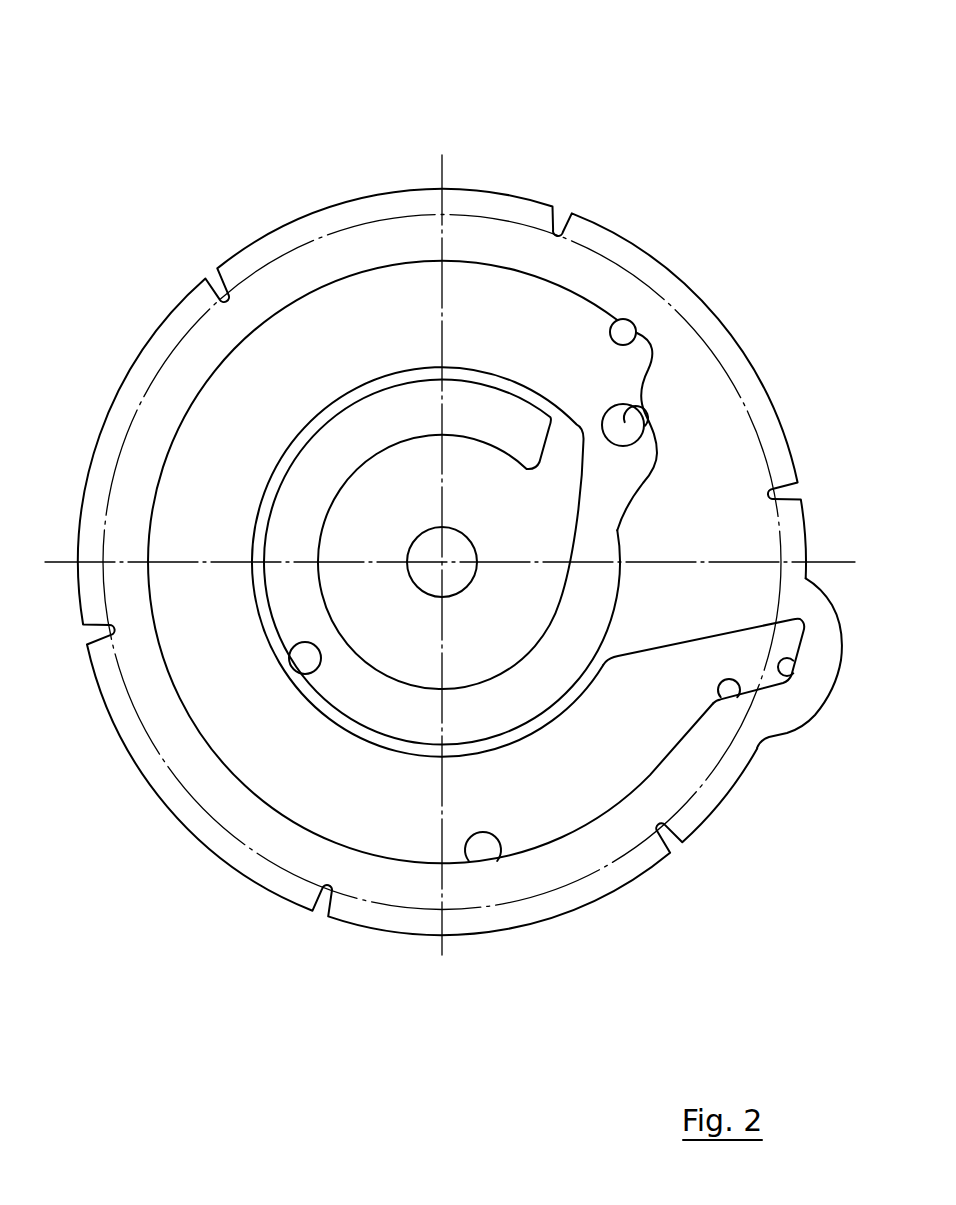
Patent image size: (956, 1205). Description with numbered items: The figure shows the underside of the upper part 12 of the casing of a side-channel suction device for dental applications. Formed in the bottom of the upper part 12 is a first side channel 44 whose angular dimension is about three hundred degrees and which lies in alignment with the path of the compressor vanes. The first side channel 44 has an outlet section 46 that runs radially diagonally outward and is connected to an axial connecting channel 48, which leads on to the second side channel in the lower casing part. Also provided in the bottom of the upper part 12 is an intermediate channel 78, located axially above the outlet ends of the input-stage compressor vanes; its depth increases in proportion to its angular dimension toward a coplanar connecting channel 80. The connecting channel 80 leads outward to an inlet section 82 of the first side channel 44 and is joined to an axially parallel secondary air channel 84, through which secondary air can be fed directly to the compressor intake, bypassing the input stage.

The upper part 12 is at (692, 193).
The first side channel 44 is at (466, 862).
The outlet section 46 is at (768, 738).
The axial connecting channel 48 is at (803, 729).
The intermediate channel 78 is at (314, 670).
The connecting channel 80 is at (657, 456).
The inlet section 82 is at (637, 322).
The secondary air channel 84 is at (641, 414).